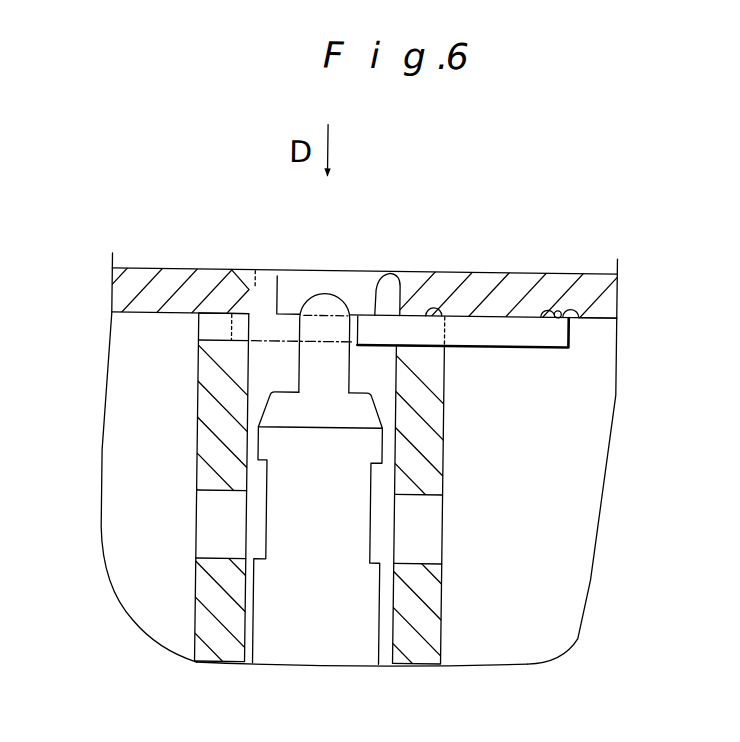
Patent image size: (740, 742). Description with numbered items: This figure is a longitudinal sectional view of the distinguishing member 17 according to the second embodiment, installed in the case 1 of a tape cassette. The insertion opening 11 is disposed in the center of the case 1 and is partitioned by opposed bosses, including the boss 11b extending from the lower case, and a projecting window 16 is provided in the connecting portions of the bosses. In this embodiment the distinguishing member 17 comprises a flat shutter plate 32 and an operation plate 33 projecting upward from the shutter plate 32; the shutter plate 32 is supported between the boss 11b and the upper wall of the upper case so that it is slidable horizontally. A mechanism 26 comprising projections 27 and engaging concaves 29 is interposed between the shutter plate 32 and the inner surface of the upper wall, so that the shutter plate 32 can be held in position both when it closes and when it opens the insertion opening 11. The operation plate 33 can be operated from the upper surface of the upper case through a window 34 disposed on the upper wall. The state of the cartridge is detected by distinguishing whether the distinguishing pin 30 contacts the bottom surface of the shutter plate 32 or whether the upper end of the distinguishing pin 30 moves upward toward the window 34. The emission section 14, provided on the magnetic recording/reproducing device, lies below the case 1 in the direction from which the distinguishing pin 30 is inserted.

The case 1 is at (130, 272).
The insertion opening 11 is at (247, 404).
The boss 11b is at (437, 462).
The emission section 14 is at (321, 655).
The projecting window 16 is at (206, 538).
The distinguishing member 17 is at (356, 266).
The mechanism 26 is at (552, 306).
The projection 27 is at (574, 316).
The engaging concave 29 is at (546, 308).
The distinguishing pin 30 is at (306, 288).
The shutter plate 32 is at (482, 341).
The operation plate 33 is at (389, 288).
The window 34 is at (277, 283).